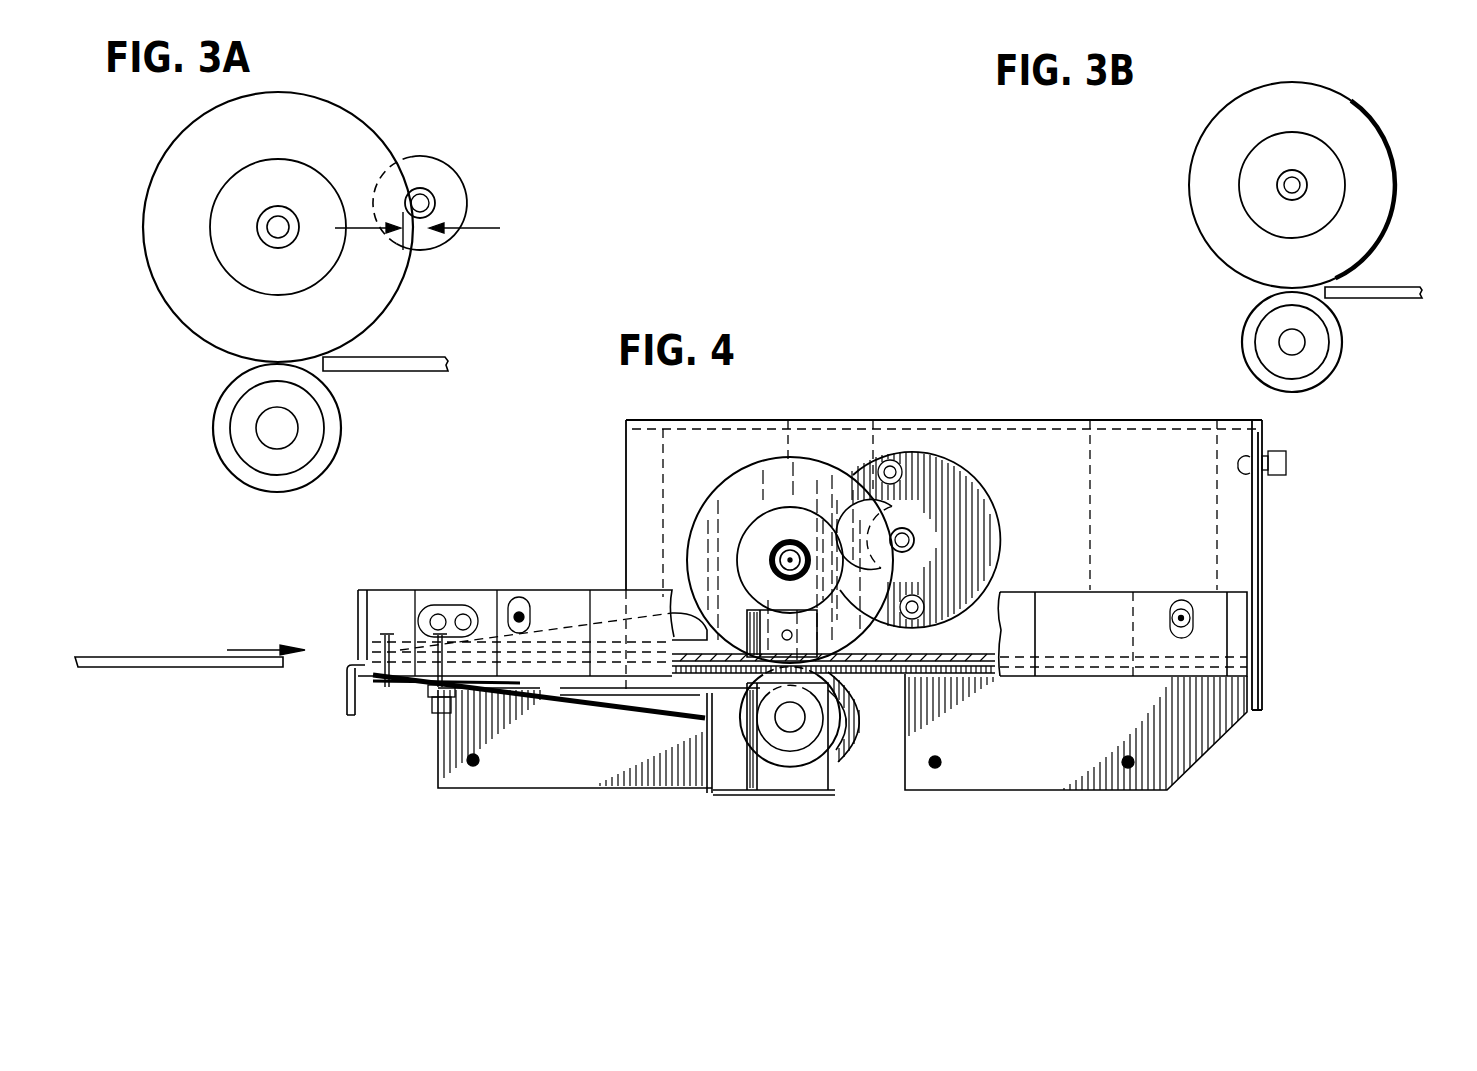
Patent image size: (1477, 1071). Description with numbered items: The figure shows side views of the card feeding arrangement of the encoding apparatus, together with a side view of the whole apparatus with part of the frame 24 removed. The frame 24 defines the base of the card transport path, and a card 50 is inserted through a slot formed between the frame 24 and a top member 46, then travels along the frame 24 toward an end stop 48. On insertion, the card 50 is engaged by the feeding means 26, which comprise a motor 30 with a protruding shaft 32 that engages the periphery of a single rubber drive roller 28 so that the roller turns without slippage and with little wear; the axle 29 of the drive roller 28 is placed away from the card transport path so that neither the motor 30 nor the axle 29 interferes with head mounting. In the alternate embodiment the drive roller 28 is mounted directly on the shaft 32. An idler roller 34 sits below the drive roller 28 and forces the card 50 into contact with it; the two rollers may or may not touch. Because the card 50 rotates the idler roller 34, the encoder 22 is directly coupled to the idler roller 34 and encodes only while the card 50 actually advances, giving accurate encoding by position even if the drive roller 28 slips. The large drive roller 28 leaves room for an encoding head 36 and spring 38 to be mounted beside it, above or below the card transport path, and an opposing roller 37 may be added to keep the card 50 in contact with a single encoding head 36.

In FIG. 4, the encoder 22 is at (845, 757).
In FIG. 4, the frame 24 is at (1037, 767).
In FIG. 3A, the feeding means 26 is at (404, 138).
In FIG. 3B, the feeding means 26 is at (1408, 174).
In FIG. 4, the feeding means 26 is at (864, 534).
In FIG. 3A, the drive roller 28 is at (320, 118).
In FIG. 3B, the drive roller 28 is at (1333, 90).
In FIG. 4, the drive roller 28 is at (777, 477).
In FIG. 3A, the axle 29 is at (263, 235).
In FIG. 4, the axle 29 is at (777, 550).
In FIG. 4, the motor 30 is at (987, 506).
In FIG. 3A, the shaft 32 is at (433, 193).
In FIG. 3B, the shaft 32 is at (1278, 188).
In FIG. 4, the shaft 32 is at (903, 538).
In FIG. 3A, the idler roller 34 is at (328, 468).
In FIG. 3B, the idler roller 34 is at (1248, 365).
In FIG. 4, the idler roller 34 is at (787, 765).
In FIG. 4, the encoding head 36 is at (706, 700).
In FIG. 4, the opposing roller 37 is at (703, 698).
In FIG. 4, the spring 38 is at (703, 613).
In FIG. 4, the top member 46 is at (355, 636).
In FIG. 4, the end stop 48 is at (1262, 623).
In FIG. 3A, the card 50 is at (403, 372).
In FIG. 3B, the card 50 is at (1380, 298).
In FIG. 4, the card 50 is at (150, 657).